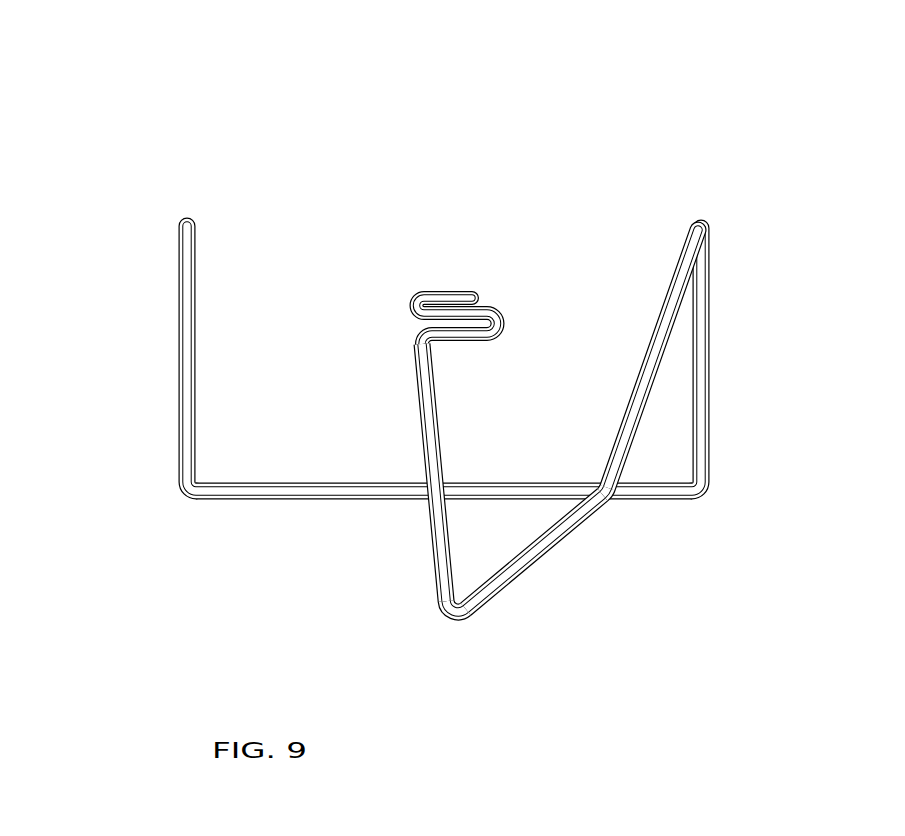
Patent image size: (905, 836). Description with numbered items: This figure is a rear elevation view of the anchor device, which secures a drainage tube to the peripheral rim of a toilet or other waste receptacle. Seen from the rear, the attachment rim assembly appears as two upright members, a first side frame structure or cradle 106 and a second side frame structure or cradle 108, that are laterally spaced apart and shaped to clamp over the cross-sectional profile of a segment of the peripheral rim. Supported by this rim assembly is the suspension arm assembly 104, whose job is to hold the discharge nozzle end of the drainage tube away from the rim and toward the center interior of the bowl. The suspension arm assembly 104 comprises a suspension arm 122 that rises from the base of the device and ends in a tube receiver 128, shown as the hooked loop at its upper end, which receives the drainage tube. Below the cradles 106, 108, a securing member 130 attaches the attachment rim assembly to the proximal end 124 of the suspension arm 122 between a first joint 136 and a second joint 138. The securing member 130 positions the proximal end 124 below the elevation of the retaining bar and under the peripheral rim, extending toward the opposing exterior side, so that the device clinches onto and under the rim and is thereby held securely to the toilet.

The suspension arm assembly 104 is at (383, 558).
The first side frame structure or cradle 106 is at (745, 208).
The second side frame structure or cradle 108 is at (136, 198).
The suspension arm 122 is at (418, 420).
The proximal end 124 is at (542, 459).
The tube receiver 128 is at (497, 273).
The securing member 130 is at (557, 548).
The first joint 136 is at (455, 626).
The second joint 138 is at (615, 498).